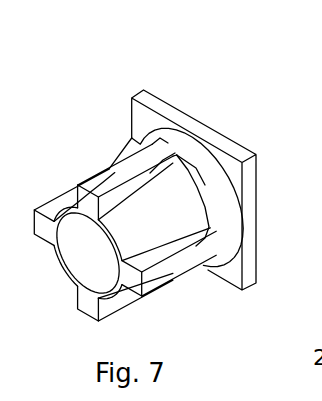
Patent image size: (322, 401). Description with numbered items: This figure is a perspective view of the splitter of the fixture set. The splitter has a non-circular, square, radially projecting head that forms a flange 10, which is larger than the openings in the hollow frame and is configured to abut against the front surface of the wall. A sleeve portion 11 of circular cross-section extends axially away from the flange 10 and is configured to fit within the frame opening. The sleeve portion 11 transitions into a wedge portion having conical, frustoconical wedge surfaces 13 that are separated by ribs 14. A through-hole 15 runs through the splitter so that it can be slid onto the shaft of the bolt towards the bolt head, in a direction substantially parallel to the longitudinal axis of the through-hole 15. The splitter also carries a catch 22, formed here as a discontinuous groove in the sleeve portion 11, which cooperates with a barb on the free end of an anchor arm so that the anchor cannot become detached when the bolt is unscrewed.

The flange 10 is at (150, 103).
The sleeve portion 11 is at (170, 142).
The wedge surfaces 13 is at (153, 208).
The ribs 14 is at (107, 185).
The through-hole 15 is at (87, 253).
The catch 22 is at (187, 188).